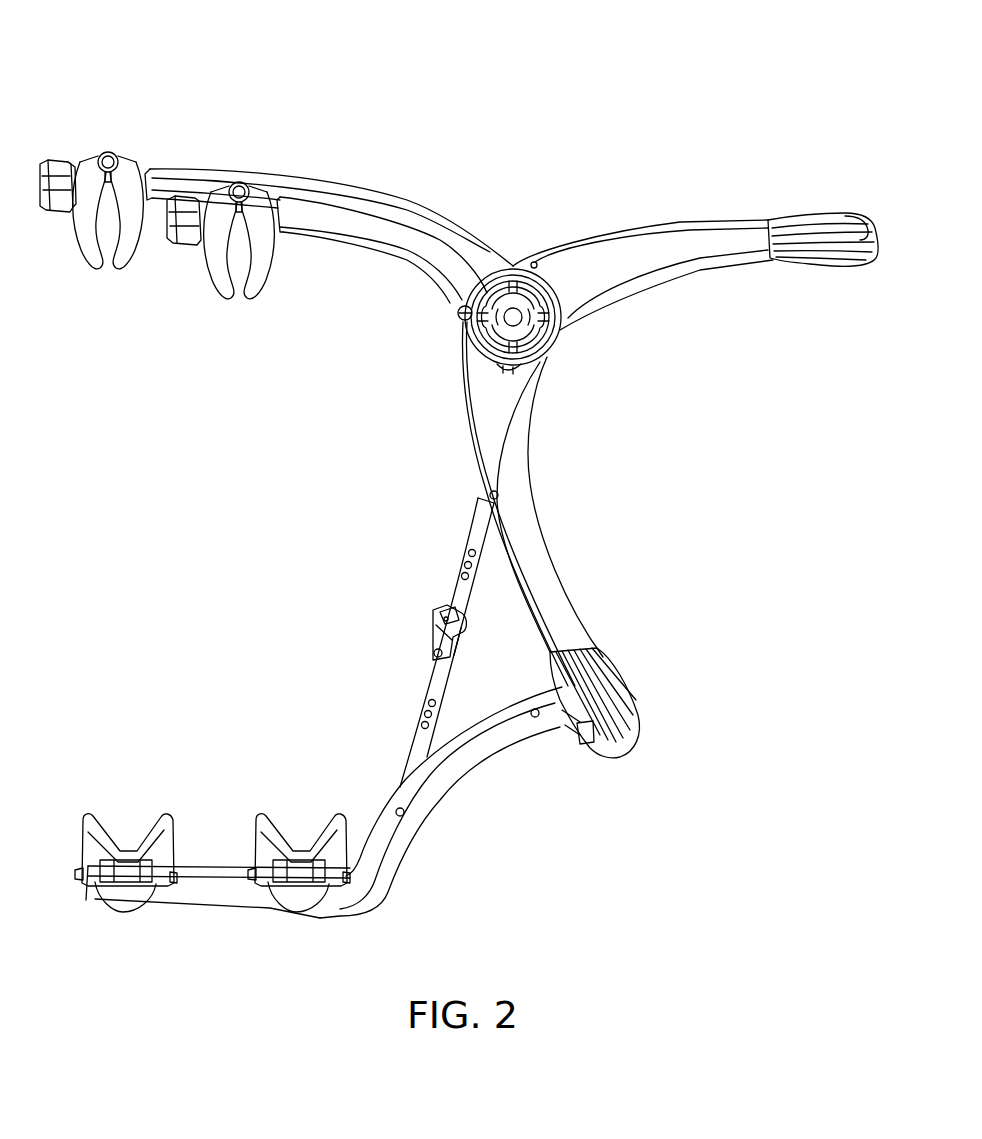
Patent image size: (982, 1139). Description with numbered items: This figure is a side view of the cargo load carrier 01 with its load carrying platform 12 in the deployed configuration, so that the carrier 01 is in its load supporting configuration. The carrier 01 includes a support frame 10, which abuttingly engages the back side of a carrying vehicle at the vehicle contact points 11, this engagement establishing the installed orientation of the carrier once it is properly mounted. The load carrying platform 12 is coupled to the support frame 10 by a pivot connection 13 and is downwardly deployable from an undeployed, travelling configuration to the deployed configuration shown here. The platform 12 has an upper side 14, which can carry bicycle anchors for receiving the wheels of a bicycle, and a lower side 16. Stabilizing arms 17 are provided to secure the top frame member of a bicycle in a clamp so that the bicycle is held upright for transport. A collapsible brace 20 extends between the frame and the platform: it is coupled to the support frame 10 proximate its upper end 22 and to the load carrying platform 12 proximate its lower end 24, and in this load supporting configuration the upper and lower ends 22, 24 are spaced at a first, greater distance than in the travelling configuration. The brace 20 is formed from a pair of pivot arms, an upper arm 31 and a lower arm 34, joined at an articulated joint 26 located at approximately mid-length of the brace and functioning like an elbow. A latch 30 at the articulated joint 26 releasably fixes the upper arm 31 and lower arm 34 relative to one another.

The cargo load carrier 01 is at (413, 45).
The support frame 10 is at (689, 273).
The vehicle contact points 11 is at (866, 272).
The load carrying platform 12 is at (73, 840).
The pivot connection 13 is at (565, 738).
The upper side 14 is at (211, 809).
The lower side 16 is at (222, 920).
The stabilizing arms 17 is at (337, 170).
The collapsible brace 20 is at (446, 589).
The upper end 22 is at (459, 492).
The lower end 24 is at (381, 791).
The articulated joint 26 is at (396, 629).
The latch 30 is at (470, 638).
The upper arm 31 is at (478, 536).
The lower arm 34 is at (434, 690).